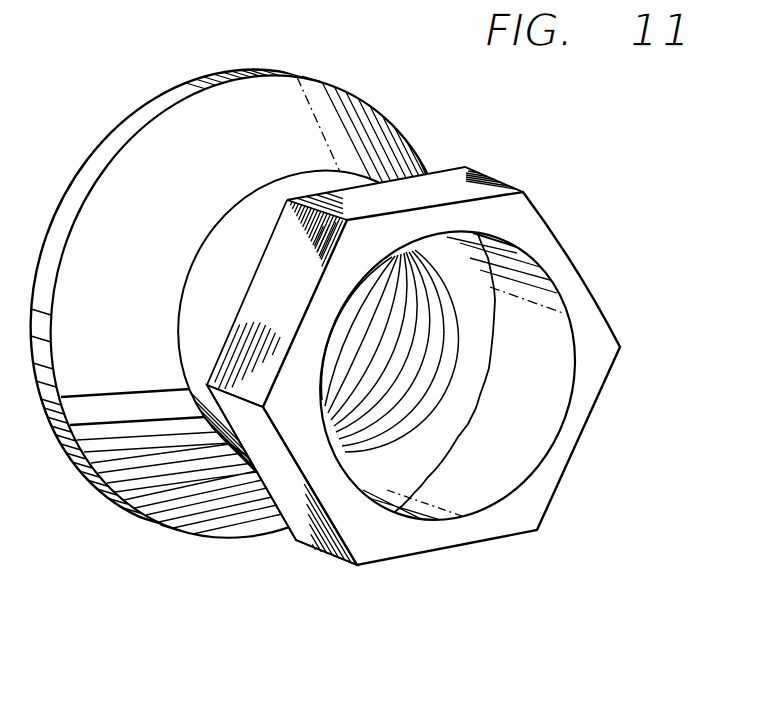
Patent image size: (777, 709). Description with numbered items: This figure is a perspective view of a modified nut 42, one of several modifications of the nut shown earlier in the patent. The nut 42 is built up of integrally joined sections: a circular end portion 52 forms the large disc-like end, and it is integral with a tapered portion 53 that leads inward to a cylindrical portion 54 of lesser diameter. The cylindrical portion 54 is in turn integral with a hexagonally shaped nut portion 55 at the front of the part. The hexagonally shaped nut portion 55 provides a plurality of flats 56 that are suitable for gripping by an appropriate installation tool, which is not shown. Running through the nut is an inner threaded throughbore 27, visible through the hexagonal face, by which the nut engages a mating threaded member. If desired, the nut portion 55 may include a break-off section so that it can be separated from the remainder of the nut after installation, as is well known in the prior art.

The inner threaded throughbore 27 is at (422, 345).
The nut 42 is at (446, 389).
The circular end portion 52 is at (127, 133).
The tapered portion 53 is at (235, 118).
The cylindrical portion 54 is at (200, 298).
The hexagonally shaped nut portion 55 is at (540, 498).
The flats 56 is at (304, 524).